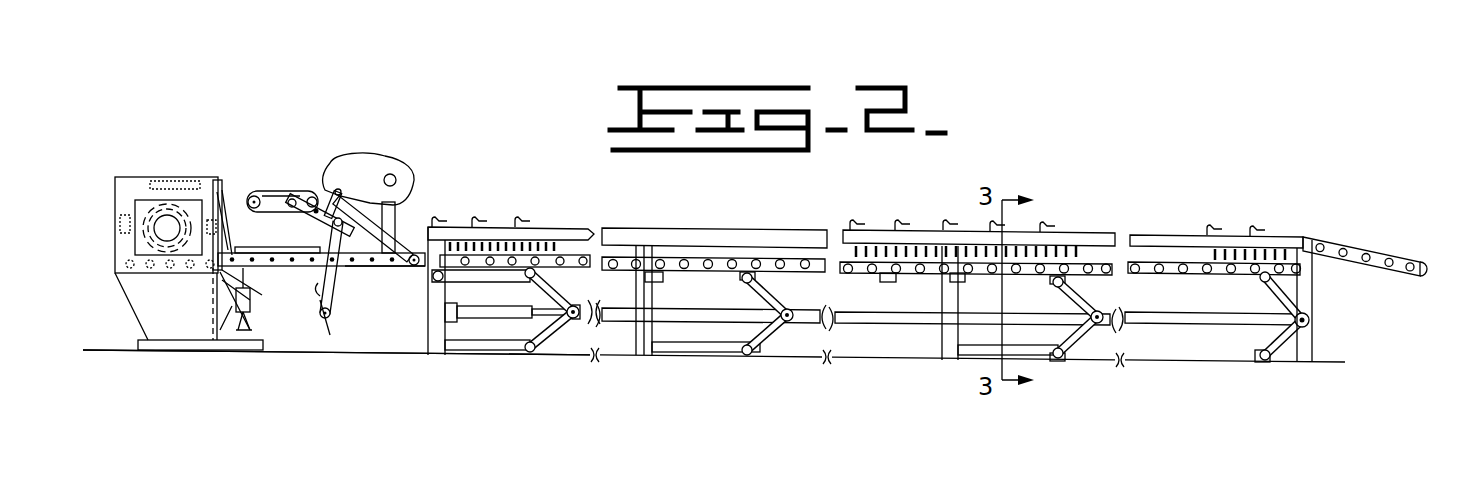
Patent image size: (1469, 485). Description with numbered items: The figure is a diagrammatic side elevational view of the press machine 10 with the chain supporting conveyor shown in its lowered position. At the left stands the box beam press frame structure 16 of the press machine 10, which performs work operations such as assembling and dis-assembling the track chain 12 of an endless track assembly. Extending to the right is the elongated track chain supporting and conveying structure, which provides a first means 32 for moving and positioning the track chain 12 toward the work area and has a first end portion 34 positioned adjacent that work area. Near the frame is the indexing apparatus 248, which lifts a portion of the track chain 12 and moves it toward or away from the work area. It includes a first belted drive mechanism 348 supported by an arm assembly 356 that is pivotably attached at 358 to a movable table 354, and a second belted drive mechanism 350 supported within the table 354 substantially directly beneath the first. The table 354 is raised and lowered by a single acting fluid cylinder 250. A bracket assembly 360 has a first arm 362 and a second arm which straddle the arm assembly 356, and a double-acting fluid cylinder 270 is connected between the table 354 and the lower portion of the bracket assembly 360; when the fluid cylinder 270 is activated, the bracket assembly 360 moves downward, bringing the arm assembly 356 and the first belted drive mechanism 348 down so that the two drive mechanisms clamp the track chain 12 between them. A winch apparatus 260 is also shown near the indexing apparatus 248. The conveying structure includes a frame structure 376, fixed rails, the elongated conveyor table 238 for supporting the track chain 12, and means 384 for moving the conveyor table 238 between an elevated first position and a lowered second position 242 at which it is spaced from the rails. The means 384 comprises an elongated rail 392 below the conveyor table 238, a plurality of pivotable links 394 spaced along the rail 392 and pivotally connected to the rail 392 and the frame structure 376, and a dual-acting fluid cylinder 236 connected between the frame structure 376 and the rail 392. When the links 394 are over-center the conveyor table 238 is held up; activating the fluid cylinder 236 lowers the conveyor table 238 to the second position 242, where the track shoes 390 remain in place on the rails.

The press machine 10 is at (232, 112).
The track chain 12 is at (836, 248).
The box beam press frame structure 16 is at (108, 198).
The first means for moving and positioning the track chain 32 is at (278, 140).
The first end portion 34 is at (456, 272).
The dual-acting fluid cylinder 236 is at (483, 313).
The conveyor table 238 is at (887, 274).
The second position 242 is at (612, 278).
The indexing apparatus 248 is at (236, 174).
The single acting fluid cylinder 250 is at (238, 298).
The winch apparatus 260 is at (372, 157).
The double-acting fluid cylinder 270 is at (318, 283).
The first belted drive mechanism 348 is at (286, 190).
The second belted drive mechanism 350 is at (305, 252).
The movable table 354 is at (352, 268).
The arm assembly 356 is at (412, 245).
The pivot attachment 358 is at (418, 268).
The bracket assembly 360 is at (312, 332).
The first arm 362 is at (327, 320).
The frame structure 376 is at (650, 302).
The means for moving the conveyor 384 is at (458, 362).
The track shoes 390 is at (535, 226).
The elongated rail 392 is at (690, 317).
The pivotable links 394 is at (1098, 292).